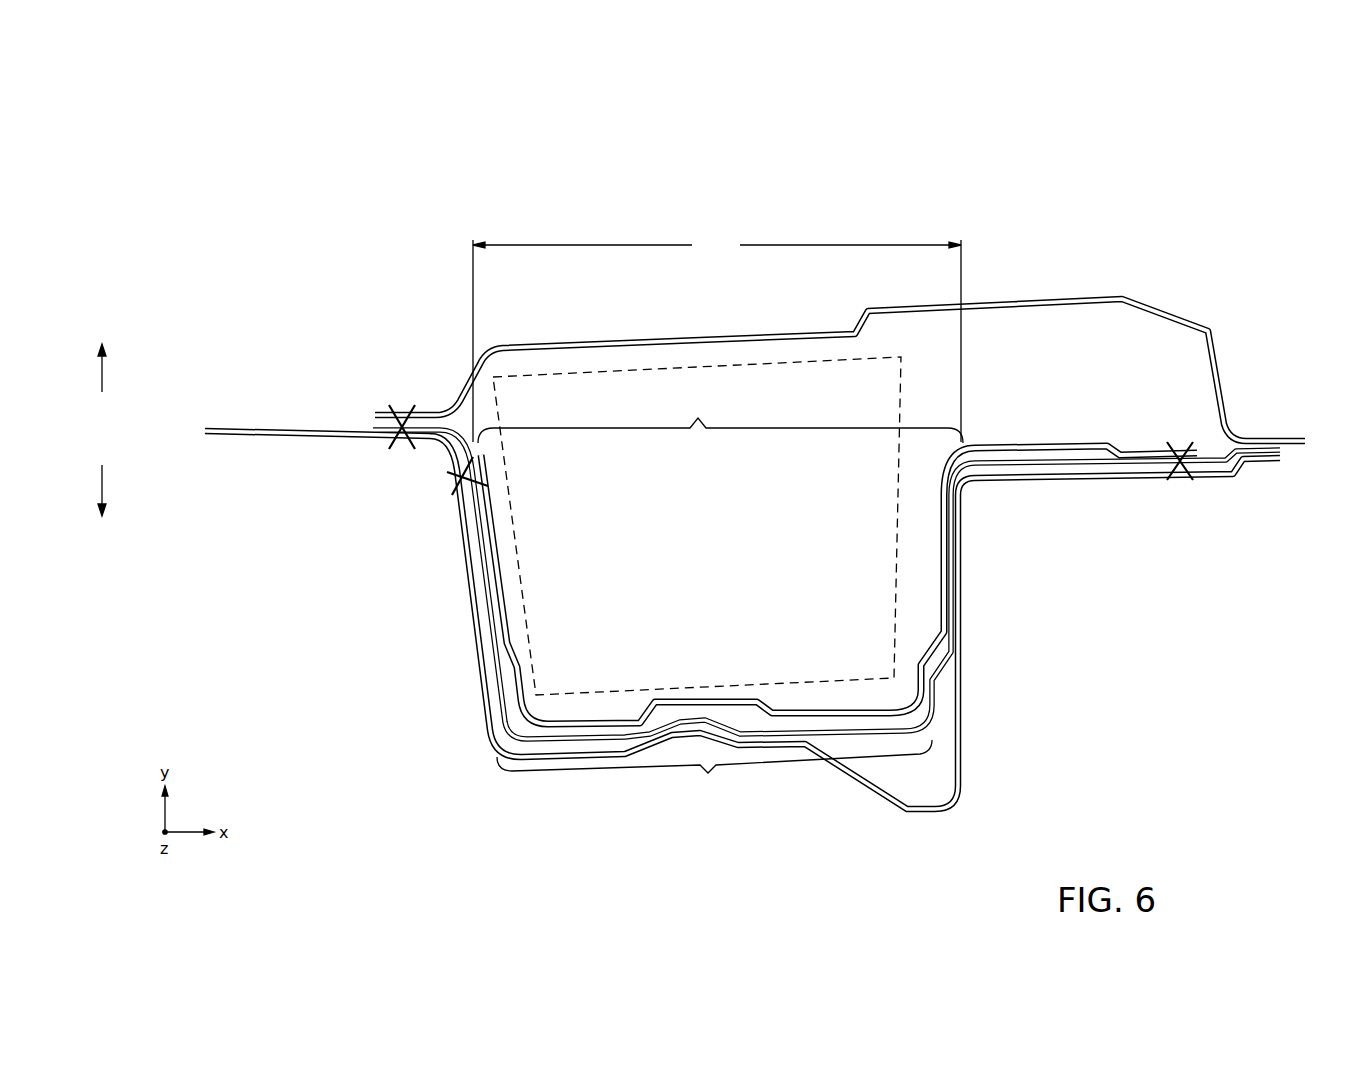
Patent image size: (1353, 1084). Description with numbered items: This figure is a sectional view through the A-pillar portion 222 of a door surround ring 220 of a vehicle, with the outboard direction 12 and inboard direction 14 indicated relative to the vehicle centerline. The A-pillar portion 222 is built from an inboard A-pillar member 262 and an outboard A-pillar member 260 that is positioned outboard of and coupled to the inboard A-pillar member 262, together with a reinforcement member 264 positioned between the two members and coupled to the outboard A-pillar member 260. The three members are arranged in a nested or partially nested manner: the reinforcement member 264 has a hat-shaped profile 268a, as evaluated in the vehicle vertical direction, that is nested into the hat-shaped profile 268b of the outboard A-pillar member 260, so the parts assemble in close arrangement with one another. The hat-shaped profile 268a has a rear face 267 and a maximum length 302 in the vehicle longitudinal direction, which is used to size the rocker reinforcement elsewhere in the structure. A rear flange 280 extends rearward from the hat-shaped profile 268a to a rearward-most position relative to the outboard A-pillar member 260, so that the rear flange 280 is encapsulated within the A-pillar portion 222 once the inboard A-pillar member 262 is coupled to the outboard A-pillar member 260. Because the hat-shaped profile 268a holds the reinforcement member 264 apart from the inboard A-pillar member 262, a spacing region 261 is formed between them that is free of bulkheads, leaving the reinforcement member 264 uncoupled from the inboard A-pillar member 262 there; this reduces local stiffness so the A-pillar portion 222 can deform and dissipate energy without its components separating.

The outboard direction 12 is at (102, 480).
The inboard direction 14 is at (102, 375).
The door surround ring 220 is at (755, 483).
The A-pillar portion 222 is at (184, 471).
The outboard A-pillar member 260 is at (898, 724).
The spacing region 261 is at (526, 346).
The inboard A-pillar member 262 is at (1043, 298).
The reinforcement member 264 is at (766, 700).
The rear face 267 is at (955, 554).
The hat-shaped profile of the reinforcement member 268a is at (720, 418).
The hat-shaped profile of the outboard A-pillar member 268b is at (714, 773).
The rear flange 280 is at (1014, 446).
The maximum length 302 is at (717, 338).